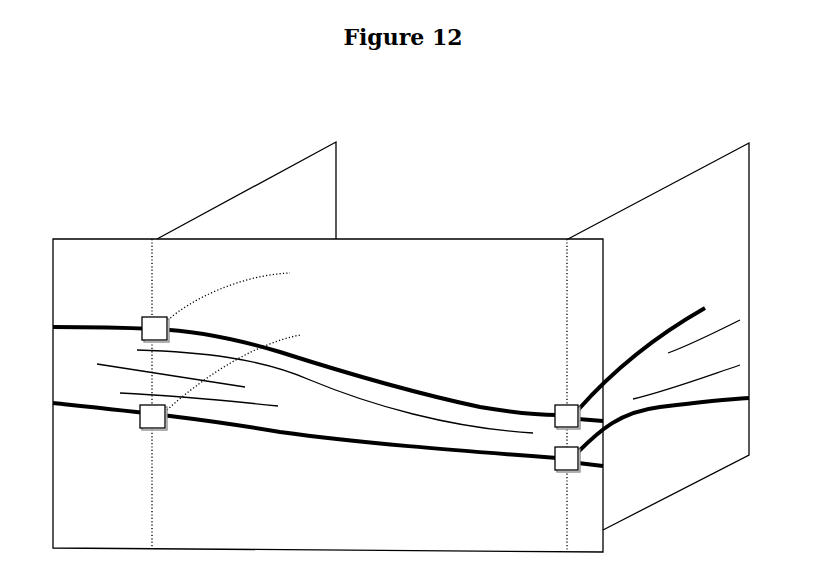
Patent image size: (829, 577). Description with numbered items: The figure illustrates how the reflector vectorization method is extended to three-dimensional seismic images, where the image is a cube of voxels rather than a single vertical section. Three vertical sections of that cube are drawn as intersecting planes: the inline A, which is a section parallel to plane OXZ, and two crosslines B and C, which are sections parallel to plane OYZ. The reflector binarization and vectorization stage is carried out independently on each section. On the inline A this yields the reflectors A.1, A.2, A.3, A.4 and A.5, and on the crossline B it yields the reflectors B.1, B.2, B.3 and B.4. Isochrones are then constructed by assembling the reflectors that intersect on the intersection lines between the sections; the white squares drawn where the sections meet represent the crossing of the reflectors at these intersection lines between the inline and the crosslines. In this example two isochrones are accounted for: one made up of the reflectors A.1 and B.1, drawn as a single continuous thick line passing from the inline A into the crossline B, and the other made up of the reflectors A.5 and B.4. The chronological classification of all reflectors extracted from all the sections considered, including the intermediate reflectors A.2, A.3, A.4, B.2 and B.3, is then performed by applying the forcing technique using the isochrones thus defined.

The inline A is at (328, 395).
The crossline B is at (658, 336).
The crossline C is at (246, 190).
The reflector A.1 is at (309, 431).
The reflector A.2 is at (179, 398).
The reflector A.3 is at (152, 371).
The reflector A.4 is at (314, 383).
The reflector A.5 is at (309, 368).
The reflector B.1 is at (683, 421).
The reflector B.2 is at (710, 378).
The reflector B.3 is at (728, 327).
The reflector B.4 is at (659, 350).